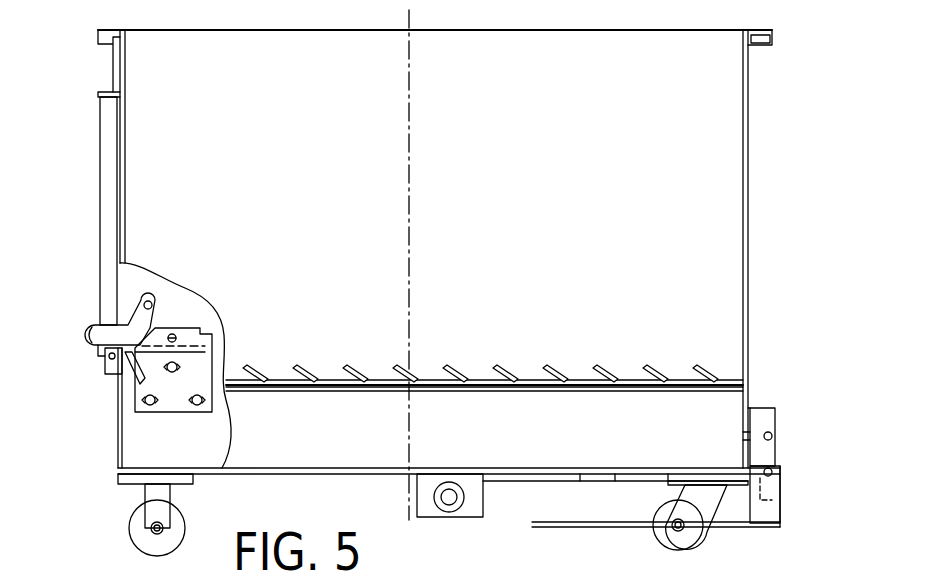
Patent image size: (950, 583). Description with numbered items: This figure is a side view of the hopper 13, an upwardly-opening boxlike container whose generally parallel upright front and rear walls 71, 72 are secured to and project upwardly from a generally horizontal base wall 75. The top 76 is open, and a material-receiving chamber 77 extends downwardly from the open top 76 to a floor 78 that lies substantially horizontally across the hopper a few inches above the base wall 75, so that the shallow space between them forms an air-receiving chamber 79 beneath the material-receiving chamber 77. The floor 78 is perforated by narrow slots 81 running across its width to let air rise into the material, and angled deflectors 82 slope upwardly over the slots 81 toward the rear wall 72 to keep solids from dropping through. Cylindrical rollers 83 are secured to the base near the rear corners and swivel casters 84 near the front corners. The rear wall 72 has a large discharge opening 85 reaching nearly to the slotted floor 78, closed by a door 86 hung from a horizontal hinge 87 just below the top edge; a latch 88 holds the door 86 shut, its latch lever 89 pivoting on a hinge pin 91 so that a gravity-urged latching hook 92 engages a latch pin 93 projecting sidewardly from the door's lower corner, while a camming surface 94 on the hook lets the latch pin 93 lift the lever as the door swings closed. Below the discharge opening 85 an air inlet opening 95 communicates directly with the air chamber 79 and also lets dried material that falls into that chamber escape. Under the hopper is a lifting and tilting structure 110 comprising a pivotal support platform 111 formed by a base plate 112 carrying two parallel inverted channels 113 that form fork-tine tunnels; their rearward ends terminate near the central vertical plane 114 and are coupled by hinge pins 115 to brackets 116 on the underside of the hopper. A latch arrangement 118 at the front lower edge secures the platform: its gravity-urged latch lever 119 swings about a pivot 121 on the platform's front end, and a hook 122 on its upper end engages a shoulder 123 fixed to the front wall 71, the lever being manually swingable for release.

The hopper 13 is at (768, 158).
The front wall 71 is at (728, 232).
The rear wall 72 is at (113, 62).
The base wall 75 is at (340, 476).
The top 76 is at (684, 26).
The material-receiving chamber 77 is at (712, 112).
The floor 78 is at (655, 376).
The air-receiving chamber 79 is at (276, 448).
The slots 81 is at (402, 394).
The deflectors 82 is at (407, 370).
The cylindrical rollers 83 is at (135, 528).
The casters 84 is at (700, 537).
The discharge opening 85 is at (128, 132).
The door 86 is at (100, 172).
The hinge 87 is at (100, 100).
The latch 88 is at (195, 322).
The latch lever 89 is at (155, 318).
The hinge pin 91 is at (180, 338).
The latching hook 92 is at (98, 333).
The latch pin 93 is at (110, 362).
The camming surface 94 is at (94, 346).
The air inlet opening 95 is at (116, 437).
The lifting and tilting structure 110 is at (568, 528).
The pivotal support platform 111 is at (782, 512).
The base plate 112 is at (640, 522).
The channels 113 is at (497, 515).
The central vertical plane 114 is at (412, 185).
The hinge pins 115 is at (449, 505).
The brackets 116 is at (470, 480).
The latch arrangement 118 is at (780, 414).
The latch lever 119 is at (775, 462).
The pivot 121 is at (774, 437).
The hook 122 is at (751, 408).
The shoulder 123 is at (748, 436).